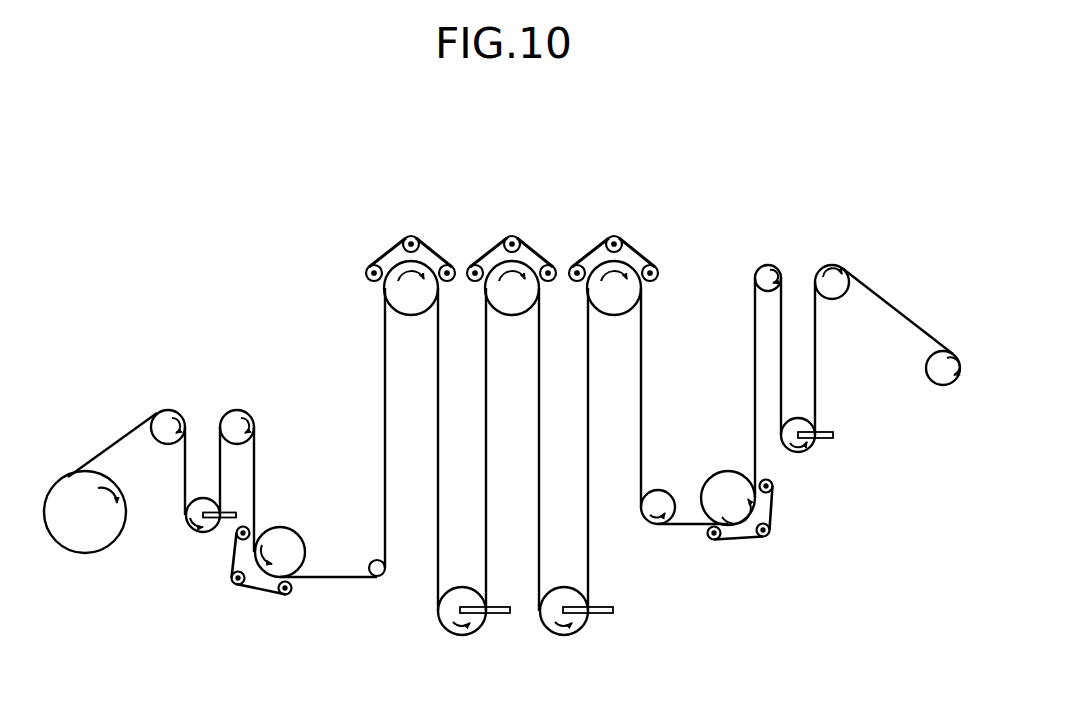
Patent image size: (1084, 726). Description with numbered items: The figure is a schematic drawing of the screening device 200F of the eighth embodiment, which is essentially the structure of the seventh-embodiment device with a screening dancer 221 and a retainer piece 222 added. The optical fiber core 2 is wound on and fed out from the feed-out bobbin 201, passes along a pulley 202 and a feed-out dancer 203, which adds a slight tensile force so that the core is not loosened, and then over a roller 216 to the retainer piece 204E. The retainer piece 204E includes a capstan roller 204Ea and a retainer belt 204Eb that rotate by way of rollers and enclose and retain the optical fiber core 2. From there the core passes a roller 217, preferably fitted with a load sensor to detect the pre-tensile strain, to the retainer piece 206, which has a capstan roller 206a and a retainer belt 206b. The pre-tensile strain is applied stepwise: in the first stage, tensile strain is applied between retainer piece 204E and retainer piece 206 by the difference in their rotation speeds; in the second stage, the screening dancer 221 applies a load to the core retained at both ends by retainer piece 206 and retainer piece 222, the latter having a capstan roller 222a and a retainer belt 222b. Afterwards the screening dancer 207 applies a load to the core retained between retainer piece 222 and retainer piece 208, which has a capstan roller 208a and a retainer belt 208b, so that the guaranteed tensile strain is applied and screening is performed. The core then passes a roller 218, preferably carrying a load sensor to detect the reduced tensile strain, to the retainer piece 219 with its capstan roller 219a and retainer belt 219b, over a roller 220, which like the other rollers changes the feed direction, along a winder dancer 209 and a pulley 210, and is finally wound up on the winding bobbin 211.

The optical fiber core 2 is at (113, 442).
The screening device 200F is at (775, 175).
The feed-out bobbin 201 is at (83, 553).
The pulley 202 is at (165, 410).
The feed-out dancer 203 is at (198, 533).
The roller 216 is at (232, 410).
The retainer piece 204E is at (257, 573).
The capstan roller 204Ea is at (275, 526).
The retainer belt 204Eb is at (247, 589).
The roller 217 is at (372, 561).
The retainer piece 206 is at (396, 235).
The capstan roller 206a is at (411, 314).
The retainer belt 206b is at (428, 250).
The retainer piece 222 is at (594, 250).
The capstan roller 222a is at (511, 314).
The retainer belt 222b is at (530, 250).
The retainer piece 208 is at (645, 235).
The capstan roller 208a is at (614, 314).
The retainer belt 208b is at (632, 250).
The screening dancer 221 is at (460, 635).
The screening dancer 207 is at (562, 635).
The roller 218 is at (642, 520).
The retainer piece 219 is at (752, 526).
The capstan roller 219a is at (710, 478).
The retainer belt 219b is at (752, 542).
The roller 220 is at (767, 265).
The winder dancer 209 is at (796, 453).
The pulley 210 is at (830, 265).
The winding bobbin 211 is at (942, 387).